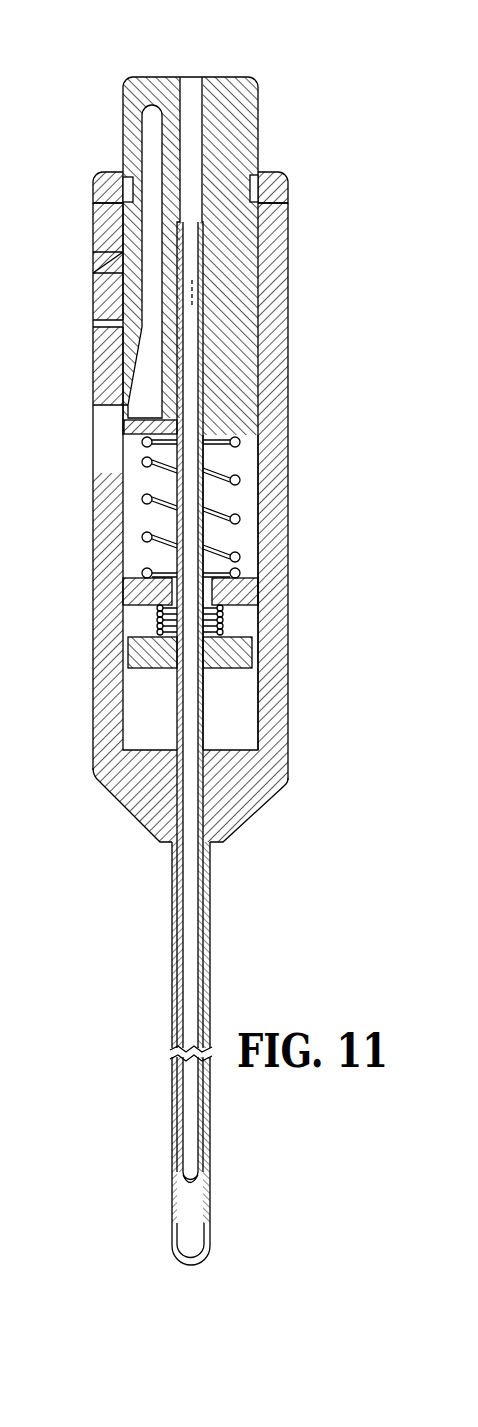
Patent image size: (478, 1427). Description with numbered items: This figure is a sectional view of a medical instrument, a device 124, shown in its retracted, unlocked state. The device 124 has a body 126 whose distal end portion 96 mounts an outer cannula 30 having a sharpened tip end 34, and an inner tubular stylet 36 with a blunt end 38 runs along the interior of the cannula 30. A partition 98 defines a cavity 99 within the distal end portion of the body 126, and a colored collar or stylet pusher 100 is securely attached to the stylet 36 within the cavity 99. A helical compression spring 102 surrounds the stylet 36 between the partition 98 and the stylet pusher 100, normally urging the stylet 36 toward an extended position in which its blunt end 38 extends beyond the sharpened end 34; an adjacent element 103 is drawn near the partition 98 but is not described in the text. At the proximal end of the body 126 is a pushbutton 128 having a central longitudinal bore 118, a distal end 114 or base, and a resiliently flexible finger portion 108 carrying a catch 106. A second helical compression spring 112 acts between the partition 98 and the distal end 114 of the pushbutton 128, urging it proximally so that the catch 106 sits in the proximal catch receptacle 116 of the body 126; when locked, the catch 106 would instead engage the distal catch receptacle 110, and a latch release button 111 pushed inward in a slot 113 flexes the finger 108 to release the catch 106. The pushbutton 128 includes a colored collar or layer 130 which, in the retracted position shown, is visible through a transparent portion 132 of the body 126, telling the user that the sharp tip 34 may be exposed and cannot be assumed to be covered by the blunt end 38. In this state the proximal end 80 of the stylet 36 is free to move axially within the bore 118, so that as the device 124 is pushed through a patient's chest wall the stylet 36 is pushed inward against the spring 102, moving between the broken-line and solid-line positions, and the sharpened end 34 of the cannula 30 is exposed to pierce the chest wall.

The device 124 is at (66, 147).
The resiliently flexible finger portion 108 is at (123, 108).
The bore 118 is at (191, 95).
The pushbutton 128 is at (228, 77).
The proximal end 80 is at (190, 222).
The transparent portion 132 is at (93, 180).
The colored collar or layer 130 is at (127, 197).
The proximal catch receptacle 116 is at (93, 257).
The catch 106 is at (93, 273).
The distal catch receptacle 110 is at (93, 324).
The latch release button 111 is at (93, 368).
The slot 113 is at (108, 410).
The distal end 114 is at (123, 435).
The body 126 is at (290, 312).
The helical compression spring 112 is at (238, 517).
The seat 103 is at (222, 592).
The helical compression spring 102 is at (222, 628).
The collar or stylet pusher 100 is at (235, 660).
The partition 98 is at (133, 605).
The cavity 99 is at (142, 718).
The inner tubular stylet 36 is at (207, 732).
The distal end portion 96 is at (258, 808).
The cannula 30 is at (212, 962).
The blunt end 38 is at (193, 1180).
The sharpened tip end 34 is at (182, 1263).